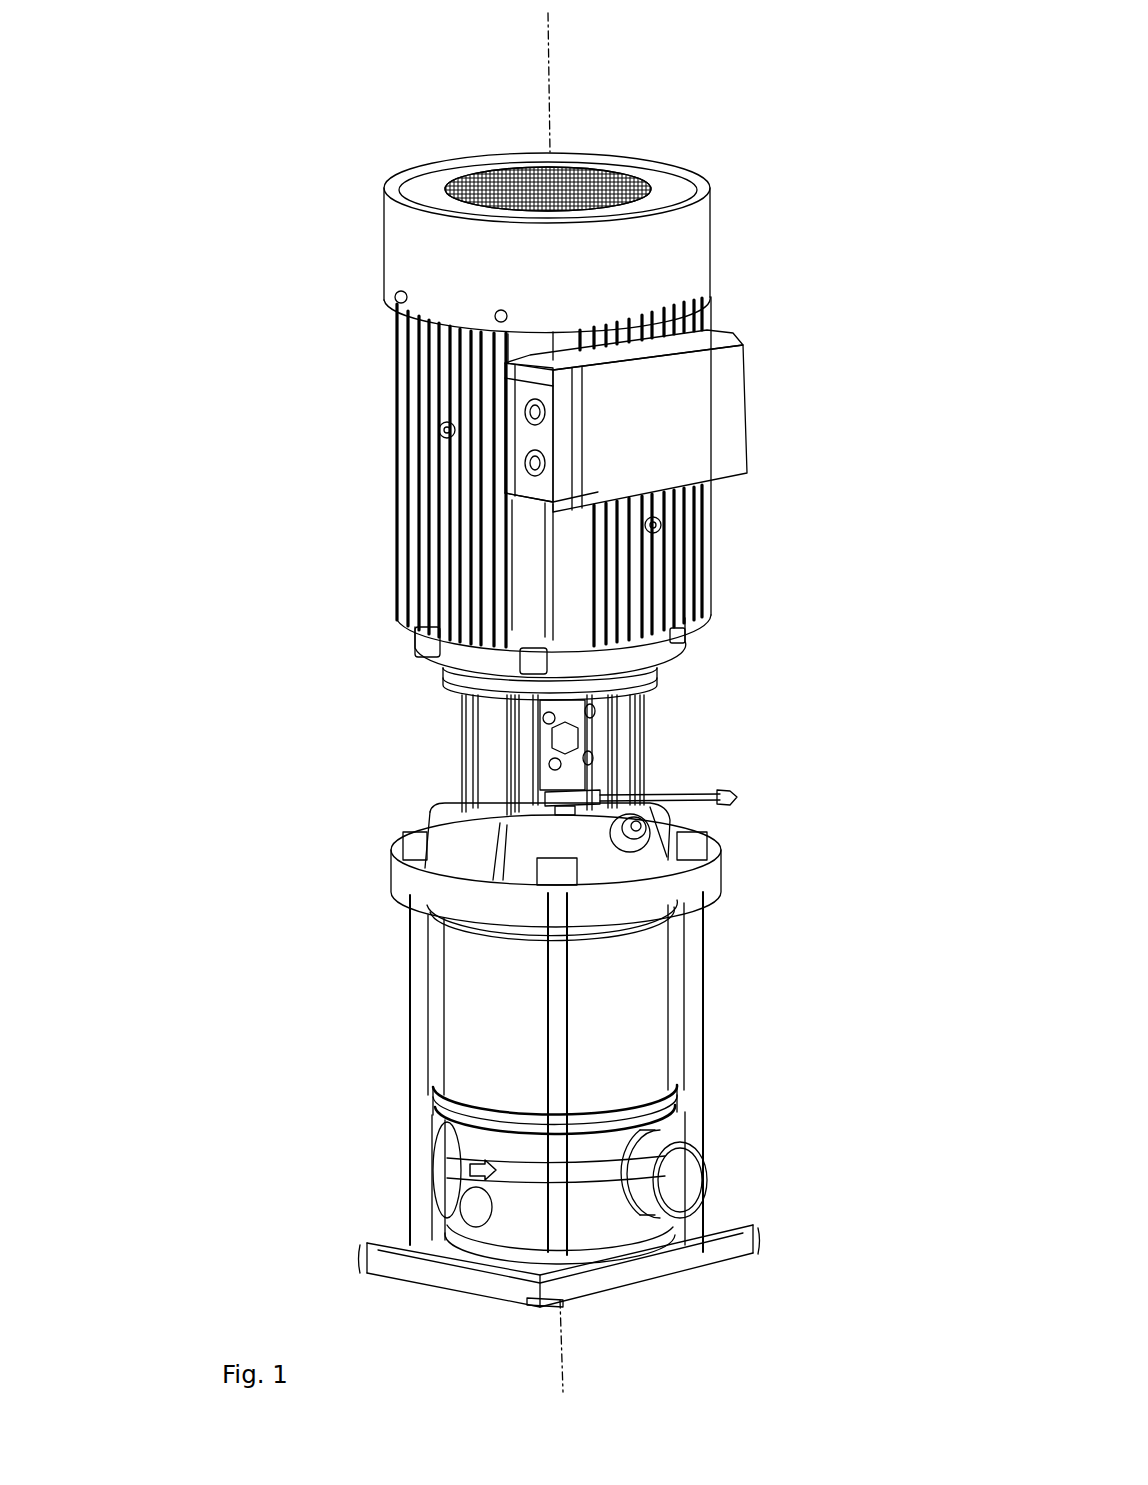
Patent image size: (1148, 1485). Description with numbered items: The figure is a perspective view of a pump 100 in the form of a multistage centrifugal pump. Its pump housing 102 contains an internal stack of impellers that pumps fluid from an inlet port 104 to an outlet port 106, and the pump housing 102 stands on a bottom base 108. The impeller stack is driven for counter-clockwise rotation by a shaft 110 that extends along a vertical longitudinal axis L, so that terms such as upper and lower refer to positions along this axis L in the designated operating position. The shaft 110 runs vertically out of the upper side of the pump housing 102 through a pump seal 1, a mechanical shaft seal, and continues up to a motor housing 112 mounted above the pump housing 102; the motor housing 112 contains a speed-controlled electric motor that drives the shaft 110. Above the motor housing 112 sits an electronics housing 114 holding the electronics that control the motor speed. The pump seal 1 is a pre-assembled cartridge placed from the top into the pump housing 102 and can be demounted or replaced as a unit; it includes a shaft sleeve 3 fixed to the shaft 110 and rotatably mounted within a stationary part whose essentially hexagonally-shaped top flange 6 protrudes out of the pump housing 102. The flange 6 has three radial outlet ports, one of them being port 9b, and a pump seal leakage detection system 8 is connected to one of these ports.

The pump 100 is at (238, 258).
The electronics housing 114 is at (358, 247).
The motor housing 112 is at (358, 396).
The shaft 110 is at (592, 792).
The shaft sleeve 3 is at (567, 793).
The pump seal 1 is at (569, 817).
The radial outlet port 9b is at (556, 808).
The pump seal leakage detection system 8 is at (580, 871).
The top flange 6 is at (590, 812).
The pump housing 102 is at (373, 1036).
The inlet port 104 is at (411, 1152).
The outlet port 106 is at (682, 1184).
The bottom base 108 is at (752, 1245).
The longitudinal axis L is at (548, 97).